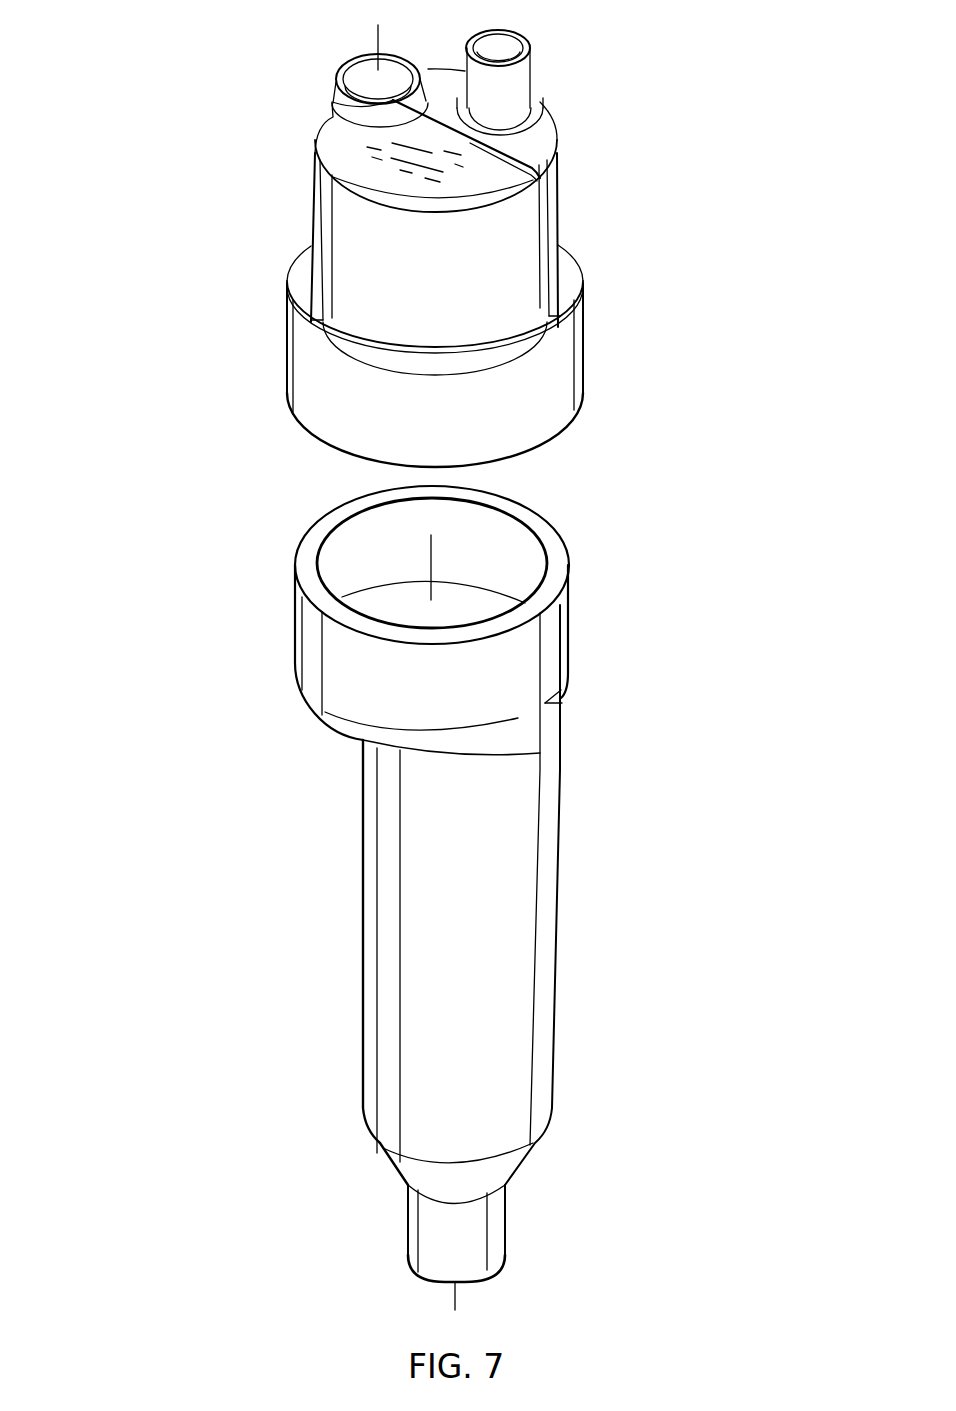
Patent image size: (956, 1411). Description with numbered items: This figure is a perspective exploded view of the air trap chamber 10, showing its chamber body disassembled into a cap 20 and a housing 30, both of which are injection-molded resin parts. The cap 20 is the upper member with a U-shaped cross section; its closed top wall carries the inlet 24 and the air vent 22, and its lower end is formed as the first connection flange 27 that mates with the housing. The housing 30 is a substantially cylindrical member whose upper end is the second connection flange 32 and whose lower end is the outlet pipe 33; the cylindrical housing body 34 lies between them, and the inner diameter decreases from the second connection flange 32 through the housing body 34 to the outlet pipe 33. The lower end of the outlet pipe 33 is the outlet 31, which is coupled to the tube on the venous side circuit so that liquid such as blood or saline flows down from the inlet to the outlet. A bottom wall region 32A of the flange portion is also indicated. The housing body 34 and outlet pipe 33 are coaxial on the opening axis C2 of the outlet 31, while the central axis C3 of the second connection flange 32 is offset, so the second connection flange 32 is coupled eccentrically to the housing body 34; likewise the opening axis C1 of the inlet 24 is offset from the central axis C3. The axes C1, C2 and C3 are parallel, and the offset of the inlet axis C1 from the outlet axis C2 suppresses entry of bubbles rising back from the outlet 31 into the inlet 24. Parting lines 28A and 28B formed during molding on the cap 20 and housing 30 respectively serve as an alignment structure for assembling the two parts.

The air trap chamber 10 is at (137, 361).
The cap 20 is at (558, 228).
The air vent 22 is at (525, 28).
The inlet 24 is at (345, 53).
The first connection flange 27 is at (583, 358).
The parting line 28A is at (500, 149).
The parting line 28B is at (550, 752).
The housing 30 is at (557, 967).
The outlet 31 is at (480, 1278).
The second connection flange 32 is at (295, 608).
The cup bottom wall 32A is at (363, 690).
The outlet pipe 33 is at (438, 1230).
The housing body 34 is at (430, 860).
The opening axis of the inlet C1 is at (377, 36).
The opening axis of the outlet C2 is at (455, 1307).
The central axis of the second connection flange C3 is at (432, 556).